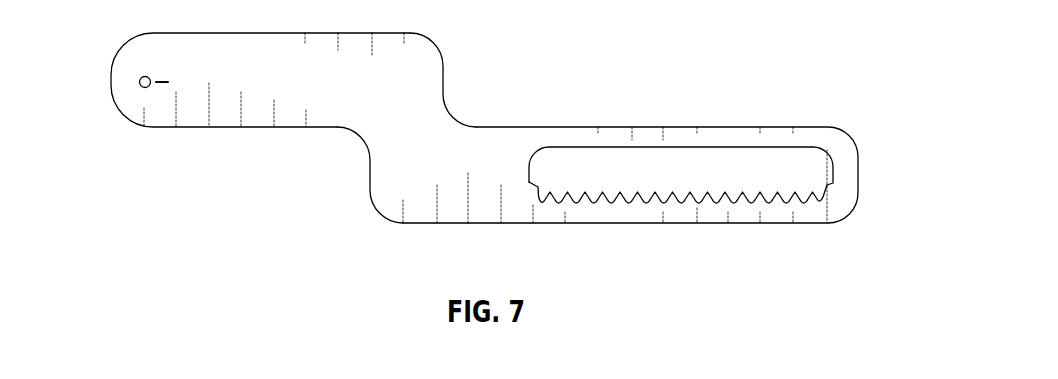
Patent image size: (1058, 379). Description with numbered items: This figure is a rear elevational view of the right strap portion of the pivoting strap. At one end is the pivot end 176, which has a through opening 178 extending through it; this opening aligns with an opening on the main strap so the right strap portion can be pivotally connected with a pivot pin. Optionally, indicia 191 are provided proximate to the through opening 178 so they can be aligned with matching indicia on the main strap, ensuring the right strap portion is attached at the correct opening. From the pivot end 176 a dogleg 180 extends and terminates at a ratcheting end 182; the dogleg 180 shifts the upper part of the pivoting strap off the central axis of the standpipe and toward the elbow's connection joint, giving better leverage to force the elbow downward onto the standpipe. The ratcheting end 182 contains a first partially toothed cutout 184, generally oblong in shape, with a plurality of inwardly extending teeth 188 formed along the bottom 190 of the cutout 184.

The pivot end 176 is at (127, 46).
The through opening 178 is at (139, 85).
The dogleg 180 is at (368, 163).
The ratcheting end 182 is at (547, 128).
The first partially toothed cutout 184 is at (738, 152).
The teeth 188 is at (582, 193).
The bottom of cutout 190 is at (715, 212).
The indicia 191 is at (161, 85).